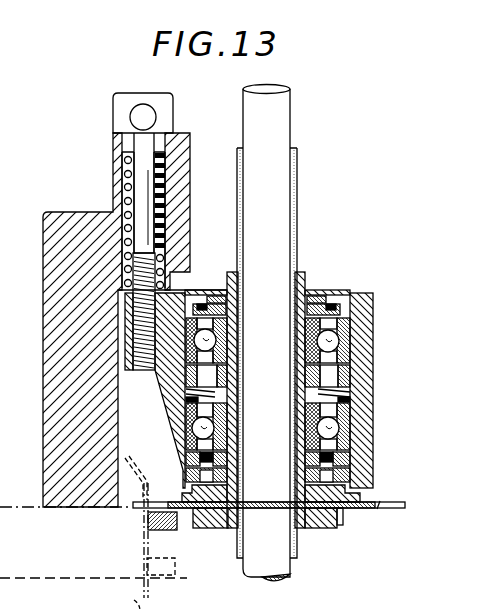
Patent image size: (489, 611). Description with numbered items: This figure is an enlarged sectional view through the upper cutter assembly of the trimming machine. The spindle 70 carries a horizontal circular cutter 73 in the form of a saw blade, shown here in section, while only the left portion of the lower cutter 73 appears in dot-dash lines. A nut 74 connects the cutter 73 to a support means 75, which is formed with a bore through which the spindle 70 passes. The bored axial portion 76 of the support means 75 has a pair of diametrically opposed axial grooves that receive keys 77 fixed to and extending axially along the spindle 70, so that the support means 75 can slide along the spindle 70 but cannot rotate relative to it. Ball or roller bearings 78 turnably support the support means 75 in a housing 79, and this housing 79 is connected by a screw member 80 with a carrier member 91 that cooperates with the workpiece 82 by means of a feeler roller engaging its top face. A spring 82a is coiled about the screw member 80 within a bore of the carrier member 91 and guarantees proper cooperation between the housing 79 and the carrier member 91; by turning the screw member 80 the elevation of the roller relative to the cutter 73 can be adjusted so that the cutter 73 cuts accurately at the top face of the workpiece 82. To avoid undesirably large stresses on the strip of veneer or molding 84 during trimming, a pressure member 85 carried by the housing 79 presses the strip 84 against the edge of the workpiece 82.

The spindle 70 is at (252, 104).
The horizontal cutter 73 is at (383, 509).
The nut 74 is at (318, 529).
The support means 75 is at (341, 511).
The bored axial portion 76 is at (228, 282).
The key 77 is at (237, 159).
The ball or roller bearing 78 is at (327, 330).
The housing 79 is at (362, 300).
The screw member 80 is at (113, 106).
The workpiece 82 is at (22, 507).
The spring 82a is at (125, 162).
The strip of veneer or molding 84 is at (127, 609).
The pressure member 85 is at (155, 565).
The support body 91 is at (62, 233).